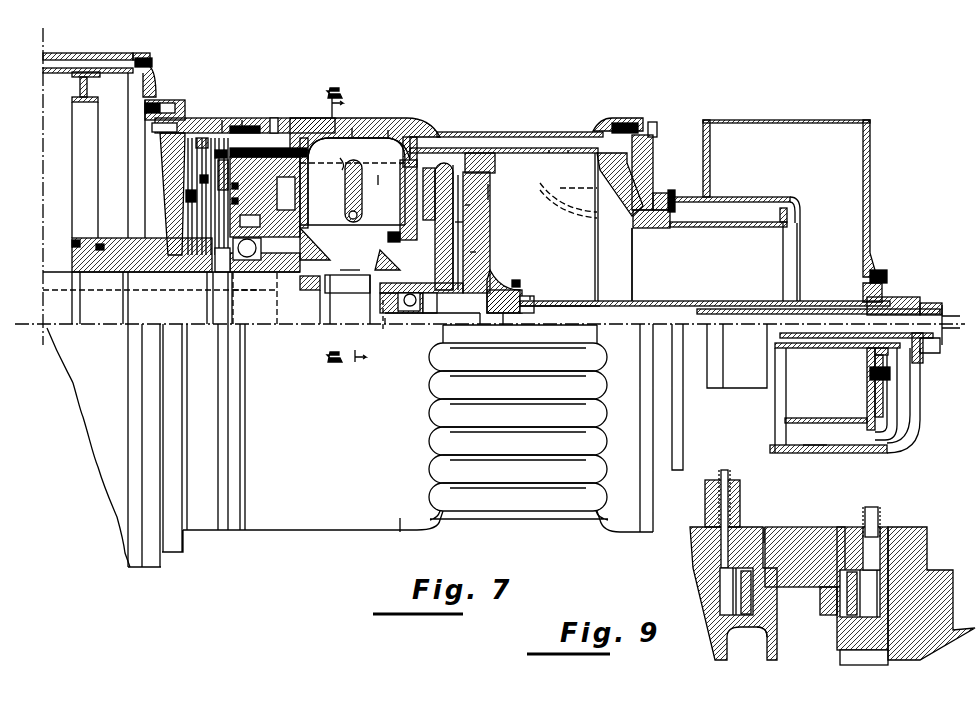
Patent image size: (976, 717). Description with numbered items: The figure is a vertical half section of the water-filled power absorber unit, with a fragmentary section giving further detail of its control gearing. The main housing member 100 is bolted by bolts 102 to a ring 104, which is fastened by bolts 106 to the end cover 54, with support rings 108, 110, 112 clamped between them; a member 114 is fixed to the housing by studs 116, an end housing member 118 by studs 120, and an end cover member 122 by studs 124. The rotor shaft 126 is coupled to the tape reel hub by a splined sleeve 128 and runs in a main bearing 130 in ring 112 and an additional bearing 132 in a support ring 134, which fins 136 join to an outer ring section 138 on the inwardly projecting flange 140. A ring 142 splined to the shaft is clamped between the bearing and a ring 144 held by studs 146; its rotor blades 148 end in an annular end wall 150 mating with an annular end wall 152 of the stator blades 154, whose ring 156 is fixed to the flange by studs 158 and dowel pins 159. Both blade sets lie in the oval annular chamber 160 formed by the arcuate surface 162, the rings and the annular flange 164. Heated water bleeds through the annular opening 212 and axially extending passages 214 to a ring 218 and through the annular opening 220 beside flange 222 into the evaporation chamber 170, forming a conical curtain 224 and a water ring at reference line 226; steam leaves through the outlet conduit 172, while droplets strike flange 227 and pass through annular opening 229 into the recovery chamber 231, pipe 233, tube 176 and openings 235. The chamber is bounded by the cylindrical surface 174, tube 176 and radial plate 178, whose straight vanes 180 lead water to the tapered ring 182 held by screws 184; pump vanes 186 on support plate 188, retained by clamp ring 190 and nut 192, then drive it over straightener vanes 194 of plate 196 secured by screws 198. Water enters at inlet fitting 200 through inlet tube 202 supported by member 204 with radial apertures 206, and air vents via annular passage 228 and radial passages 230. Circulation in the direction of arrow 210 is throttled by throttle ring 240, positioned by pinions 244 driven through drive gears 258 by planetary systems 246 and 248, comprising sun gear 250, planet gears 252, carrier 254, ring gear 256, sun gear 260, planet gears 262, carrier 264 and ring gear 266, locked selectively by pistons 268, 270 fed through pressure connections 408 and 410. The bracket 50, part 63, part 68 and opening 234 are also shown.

In FIG. 7, the mounting plate 50 is at (119, 55).
In FIG. 7, the end cover 54 is at (158, 88).
In FIG. 7, the support beam 63 is at (72, 93).
In FIG. 7, the housing section 68 is at (95, 318).
In FIG. 7, the main power absorber housing member 100 is at (293, 121).
In FIG. 7, the bolts 102 is at (143, 131).
In FIG. 7, the ring 104 is at (168, 100).
In FIG. 9, the ring 104 is at (745, 505).
In FIG. 7, the bolts 106 is at (188, 110).
In FIG. 7, the support ring 108 is at (205, 120).
In FIG. 7, the support ring 110 is at (222, 120).
In FIG. 9, the support ring 110 is at (858, 527).
In FIG. 7, the support ring 112 is at (242, 120).
In FIG. 9, the support ring 112 is at (930, 527).
In FIG. 7, the housing member 114 is at (657, 162).
In FIG. 7, the studs 116 is at (628, 116).
In FIG. 7, the end housing member 118 is at (822, 457).
In FIG. 7, the studs 120 is at (678, 188).
In FIG. 7, the end cover member 122 is at (898, 294).
In FIG. 7, the studs 124 is at (887, 272).
In FIG. 7, the rotor shaft 126 is at (288, 330).
In FIG. 7, the splined sleeve 128 is at (110, 252).
In FIG. 7, the main bearing 130 is at (244, 290).
In FIG. 7, the additional bearing 132 is at (408, 313).
In FIG. 7, the support ring 134 is at (432, 310).
In FIG. 7, the fins 136 is at (423, 256).
In FIG. 7, the outer ring section 138 is at (395, 256).
In FIG. 7, the inwardly projecting flange 140 is at (400, 198).
In FIG. 7, the ring 142 is at (334, 247).
In FIG. 7, the ring 144 is at (330, 282).
In FIG. 7, the studs 146 is at (325, 326).
In FIG. 7, the rotor blades 148 is at (312, 196).
In FIG. 7, the annular end wall 150 is at (332, 158).
In FIG. 7, the annular end wall 152 is at (356, 165).
In FIG. 7, the stator blades 154 is at (378, 175).
In FIG. 7, the ring 156 is at (392, 238).
In FIG. 7, the studs 158 is at (455, 222).
In FIG. 7, the dowel pins 159 is at (438, 137).
In FIG. 7, the annular chamber 160 is at (357, 138).
In FIG. 7, the annular arcuate surface 162 is at (386, 135).
In FIG. 7, the axially projecting annular flange 164 is at (340, 270).
In FIG. 7, the evaporation chamber 170 is at (549, 150).
In FIG. 7, the outlet conduit 172 is at (866, 118).
In FIG. 7, the cylindrical surface 174 is at (530, 148).
In FIG. 7, the tube 176 is at (650, 299).
In FIG. 7, the radial plate 178 is at (485, 236).
In FIG. 7, the straight vanes 180 is at (488, 184).
In FIG. 7, the inwardly tapered ring 182 is at (472, 172).
In FIG. 7, the screws 184 is at (480, 132).
In FIG. 7, the pump vanes 186 is at (470, 252).
In FIG. 7, the support plate 188 is at (492, 266).
In FIG. 7, the clamp ring 190 is at (510, 290).
In FIG. 7, the nut 192 is at (512, 300).
In FIG. 7, the straightener vanes 194 is at (470, 190).
In FIG. 7, the plate 196 is at (465, 205).
In FIG. 7, the screws 198 is at (428, 173).
In FIG. 7, the inlet fitting 200 is at (926, 352).
In FIG. 7, the inlet tube 202 is at (697, 301).
In FIG. 7, the member 204 is at (480, 330).
In FIG. 7, the radial apertures 206 is at (500, 320).
In FIG. 7, the arrow 210 is at (375, 132).
In FIG. 7, the annular opening 212 is at (411, 137).
In FIG. 7, the axially extending passages 214 is at (568, 150).
In FIG. 7, the ring 218 is at (603, 205).
In FIG. 7, the annular opening 220 is at (620, 228).
In FIG. 7, the projecting flange 222 is at (647, 230).
In FIG. 7, the conical curtain 224 is at (560, 216).
In FIG. 7, the reference line 226 is at (575, 186).
In FIG. 7, the flange 227 is at (756, 198).
In FIG. 7, the annular passage 228 is at (350, 283).
In FIG. 7, the annular opening 229 is at (784, 238).
In FIG. 7, the radial passages 230 is at (383, 330).
In FIG. 7, the recovery chamber 231 is at (725, 198).
In FIG. 7, the pipe 233 is at (921, 405).
In FIG. 7, the passage 234 is at (530, 296).
In FIG. 7, the openings 235 is at (538, 302).
In FIG. 7, the annular throttle ring 240 is at (250, 238).
In FIG. 7, the pinions 244 is at (268, 183).
In FIG. 7, the planetary gear system 246 is at (268, 226).
In FIG. 7, the planetary gear system 248 is at (165, 200).
In FIG. 7, the sun gear 250 is at (218, 272).
In FIG. 7, the planet gears 252 is at (243, 202).
In FIG. 7, the carrier 254 is at (175, 215).
In FIG. 7, the ring gear 256 is at (214, 138).
In FIG. 9, the ring gear 256 is at (822, 605).
In FIG. 7, the drive gears 258 is at (240, 190).
In FIG. 7, the sun gear 260 is at (185, 285).
In FIG. 7, the planet gears 262 is at (122, 243).
In FIG. 7, the carrier 264 is at (175, 176).
In FIG. 9, the carrier 264 is at (768, 642).
In FIG. 7, the ring gear 266 is at (173, 194).
In FIG. 9, the piston 268 is at (740, 600).
In FIG. 9, the piston 270 is at (865, 600).
In FIG. 9, the pressure connection 408 is at (808, 527).
In FIG. 9, the pressure connection 410 is at (880, 515).